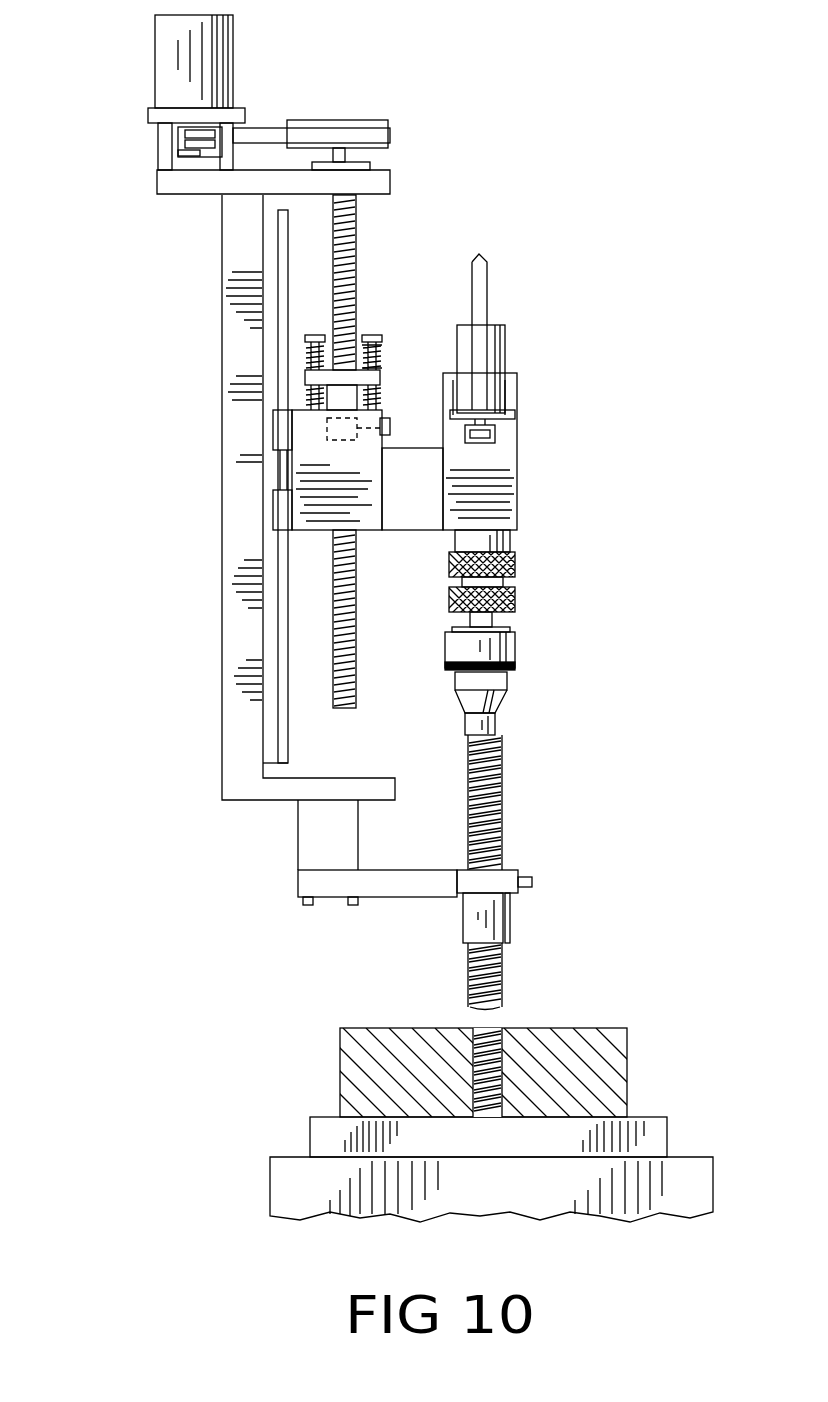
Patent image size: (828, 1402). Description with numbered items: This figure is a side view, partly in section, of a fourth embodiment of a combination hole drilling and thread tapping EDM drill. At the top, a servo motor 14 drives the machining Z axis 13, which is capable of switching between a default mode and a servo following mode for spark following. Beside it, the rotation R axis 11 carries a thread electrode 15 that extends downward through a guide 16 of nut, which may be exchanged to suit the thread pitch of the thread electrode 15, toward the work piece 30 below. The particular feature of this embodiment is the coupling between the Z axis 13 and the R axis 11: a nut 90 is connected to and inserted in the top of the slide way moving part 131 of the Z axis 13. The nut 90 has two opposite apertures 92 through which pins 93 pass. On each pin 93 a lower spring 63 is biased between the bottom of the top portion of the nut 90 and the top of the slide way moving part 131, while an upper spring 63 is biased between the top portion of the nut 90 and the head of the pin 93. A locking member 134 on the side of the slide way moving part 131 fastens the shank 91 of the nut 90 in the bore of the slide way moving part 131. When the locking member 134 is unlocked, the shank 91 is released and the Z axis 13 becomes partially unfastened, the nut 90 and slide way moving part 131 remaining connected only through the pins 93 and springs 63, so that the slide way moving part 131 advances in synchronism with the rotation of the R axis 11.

The servo motor 14 is at (170, 70).
The Z axis 13 is at (355, 215).
The apertures 92 is at (305, 378).
The spring 63 is at (310, 355).
The pins 93 is at (372, 338).
The slide way moving part 131 is at (310, 515).
The locking member 134 is at (390, 430).
The nut 90 is at (383, 373).
The shank 91 is at (387, 398).
The R axis 11 is at (510, 540).
The thread electrode 15 is at (500, 825).
The guide 16 is at (497, 922).
The workpiece 30 is at (593, 1032).